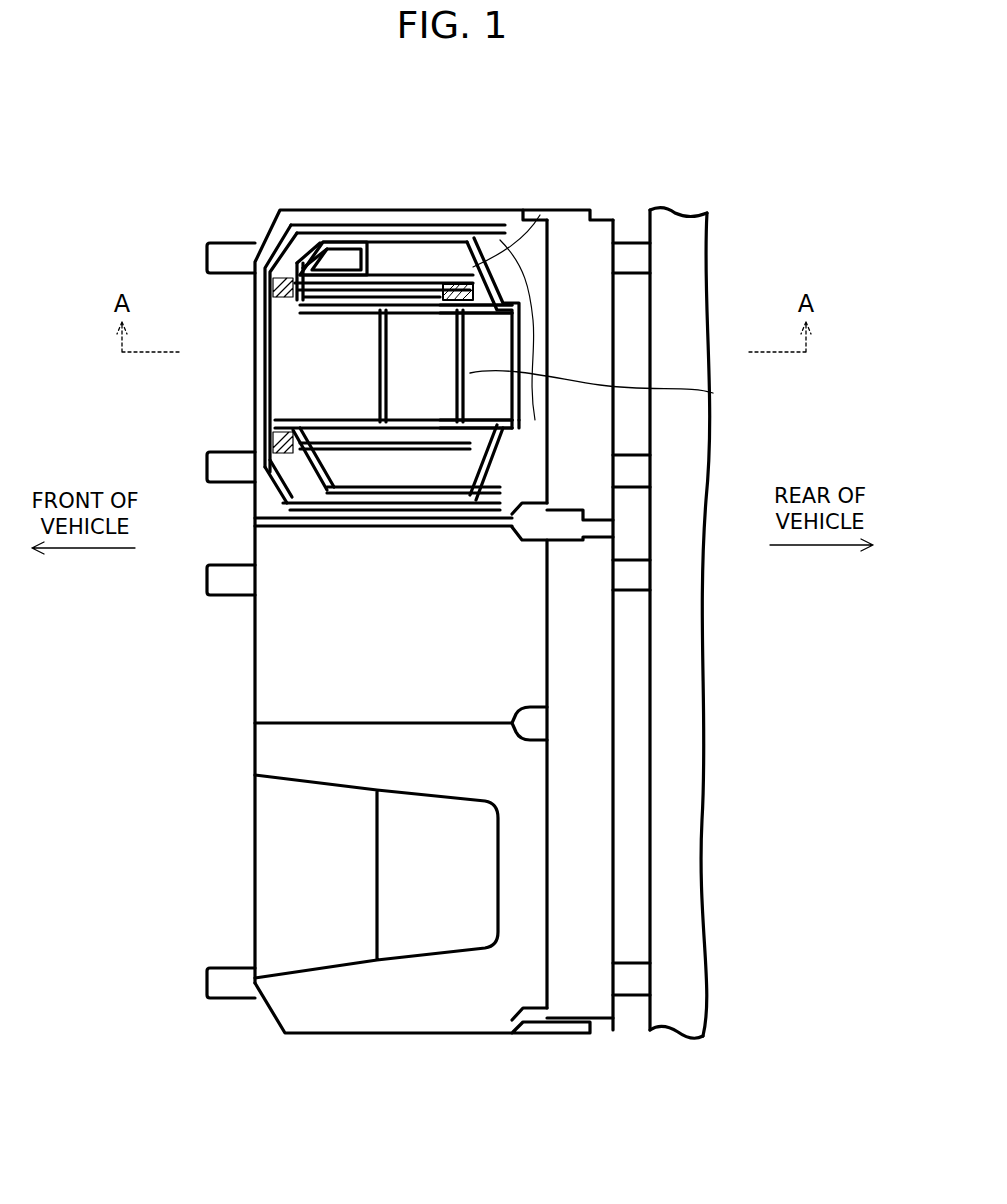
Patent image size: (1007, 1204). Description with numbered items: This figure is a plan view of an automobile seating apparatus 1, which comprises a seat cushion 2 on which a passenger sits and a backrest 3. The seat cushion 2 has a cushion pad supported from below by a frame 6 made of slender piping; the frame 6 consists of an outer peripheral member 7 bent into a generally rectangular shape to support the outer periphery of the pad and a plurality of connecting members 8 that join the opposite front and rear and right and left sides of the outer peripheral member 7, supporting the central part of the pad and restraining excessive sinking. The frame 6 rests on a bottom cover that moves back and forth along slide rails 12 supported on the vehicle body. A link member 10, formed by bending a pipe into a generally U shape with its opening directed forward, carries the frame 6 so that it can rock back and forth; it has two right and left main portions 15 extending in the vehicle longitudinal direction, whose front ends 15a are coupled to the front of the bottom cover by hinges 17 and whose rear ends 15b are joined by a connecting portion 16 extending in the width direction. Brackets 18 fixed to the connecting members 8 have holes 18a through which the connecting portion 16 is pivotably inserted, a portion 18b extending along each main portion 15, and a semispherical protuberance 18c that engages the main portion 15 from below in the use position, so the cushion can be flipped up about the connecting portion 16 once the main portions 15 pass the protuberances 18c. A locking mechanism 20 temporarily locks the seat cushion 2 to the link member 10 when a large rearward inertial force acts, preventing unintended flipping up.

The seating apparatus 1 is at (585, 187).
The seat cushion 2 is at (378, 208).
The backrest 3 is at (614, 300).
The frame 6 is at (438, 232).
The outer peripheral member 7 is at (313, 226).
The connecting members 8 is at (320, 418).
The link member 10 is at (447, 286).
The slide rails 12 is at (206, 984).
The main portions 15 is at (407, 282).
The front ends 15a is at (268, 467).
The rear ends 15b is at (437, 512).
The connecting portion 16 is at (610, 388).
The hinges 17 is at (268, 258).
The brackets 18 is at (547, 209).
The holes 18a is at (512, 209).
The portion 18b is at (444, 318).
The semispherical protuberance 18c is at (460, 233).
The locking mechanism 20 is at (345, 262).